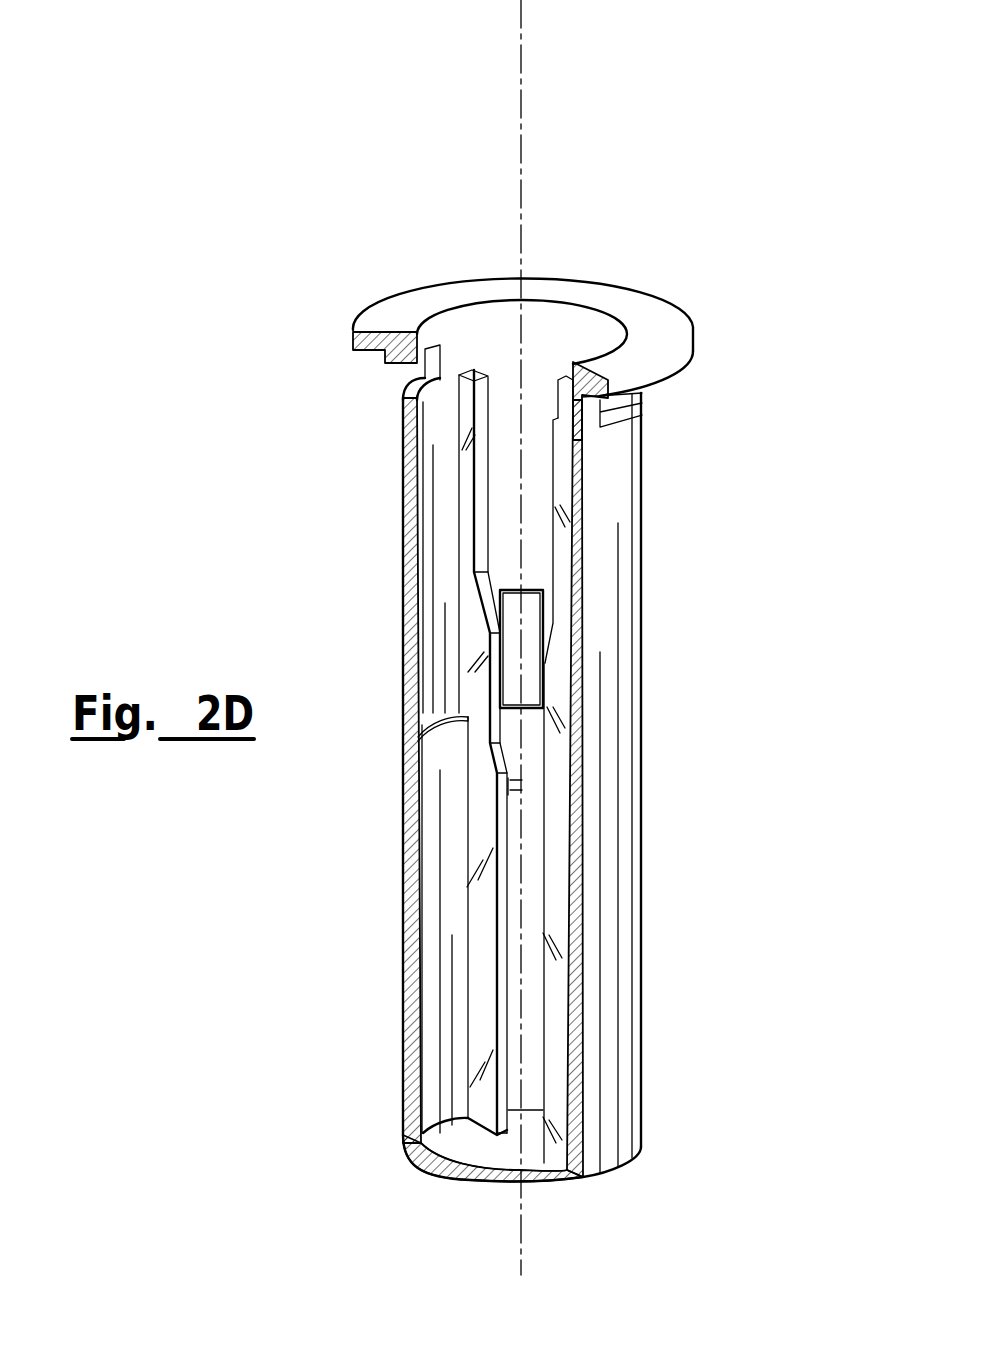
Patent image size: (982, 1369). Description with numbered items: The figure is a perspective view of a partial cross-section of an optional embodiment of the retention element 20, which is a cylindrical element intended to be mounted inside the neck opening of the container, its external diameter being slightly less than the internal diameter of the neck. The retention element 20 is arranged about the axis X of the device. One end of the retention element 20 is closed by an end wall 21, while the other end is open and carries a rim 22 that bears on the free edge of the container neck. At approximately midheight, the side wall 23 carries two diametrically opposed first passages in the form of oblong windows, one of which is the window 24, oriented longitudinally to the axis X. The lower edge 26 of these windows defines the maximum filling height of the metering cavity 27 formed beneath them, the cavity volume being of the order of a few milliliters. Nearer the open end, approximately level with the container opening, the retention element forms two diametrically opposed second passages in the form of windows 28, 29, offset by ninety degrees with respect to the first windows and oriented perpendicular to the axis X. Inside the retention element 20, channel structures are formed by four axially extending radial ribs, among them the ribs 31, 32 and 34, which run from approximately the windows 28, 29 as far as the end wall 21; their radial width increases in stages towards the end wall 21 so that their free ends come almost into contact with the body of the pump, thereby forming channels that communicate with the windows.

The axis X is at (522, 72).
The retention element 20 is at (646, 642).
The end wall 21 is at (550, 1182).
The rim 22 is at (660, 320).
The side wall 23 is at (403, 650).
The window 24 is at (533, 578).
The lower edge 26 is at (543, 710).
The metering cavity 27 is at (528, 912).
The window 28 is at (399, 382).
The window 29 is at (616, 406).
The rib 31 is at (483, 413).
The rib 32 is at (565, 378).
The rib 34 is at (562, 448).